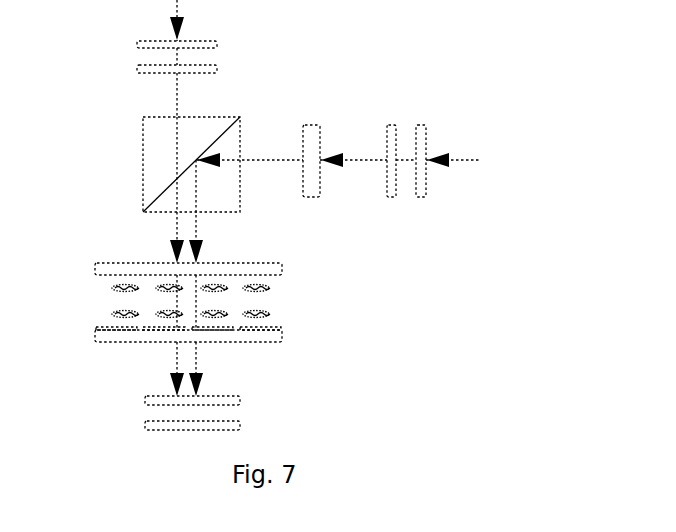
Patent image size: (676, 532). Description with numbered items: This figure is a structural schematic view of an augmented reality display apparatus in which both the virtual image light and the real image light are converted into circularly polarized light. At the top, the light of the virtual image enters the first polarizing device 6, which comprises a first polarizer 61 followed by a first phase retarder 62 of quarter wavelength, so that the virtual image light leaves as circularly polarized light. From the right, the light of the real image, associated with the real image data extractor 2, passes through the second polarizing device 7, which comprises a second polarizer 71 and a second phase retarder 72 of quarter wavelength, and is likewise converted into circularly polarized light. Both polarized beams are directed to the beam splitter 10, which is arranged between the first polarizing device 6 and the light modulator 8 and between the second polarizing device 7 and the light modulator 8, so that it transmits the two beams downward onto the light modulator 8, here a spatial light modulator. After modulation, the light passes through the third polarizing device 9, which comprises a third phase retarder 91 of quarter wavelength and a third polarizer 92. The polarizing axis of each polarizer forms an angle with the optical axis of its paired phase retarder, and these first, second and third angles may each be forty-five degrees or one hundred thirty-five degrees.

The real image data extractor 2 is at (310, 124).
The first polarizing device 6 is at (72, 25).
The first polarizer 61 is at (136, 43).
The first phase retarder 62 is at (136, 68).
The second polarizing device 7 is at (398, 78).
The second polarizer 71 is at (422, 125).
The second phase retarder 72 is at (392, 125).
The light modulator 8 is at (103, 303).
The third polarizing device 9 is at (78, 383).
The third phase retarder 91 is at (145, 400).
The third polarizer 92 is at (145, 425).
The beam splitter 10 is at (143, 170).